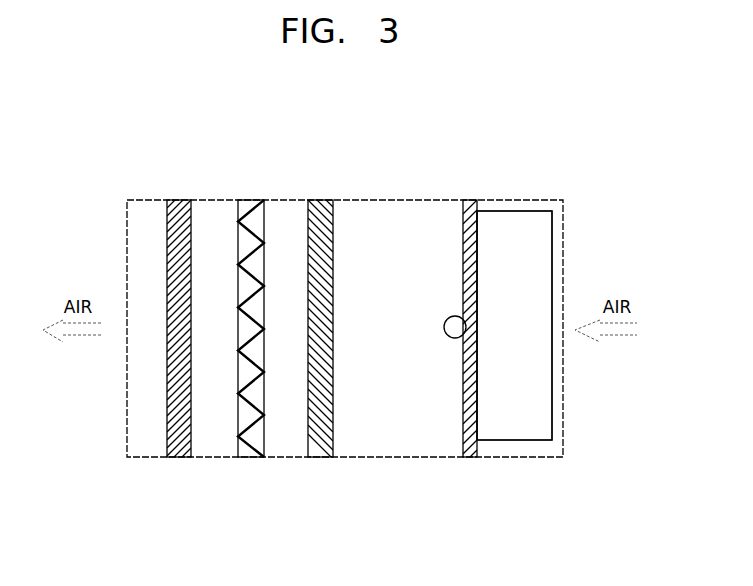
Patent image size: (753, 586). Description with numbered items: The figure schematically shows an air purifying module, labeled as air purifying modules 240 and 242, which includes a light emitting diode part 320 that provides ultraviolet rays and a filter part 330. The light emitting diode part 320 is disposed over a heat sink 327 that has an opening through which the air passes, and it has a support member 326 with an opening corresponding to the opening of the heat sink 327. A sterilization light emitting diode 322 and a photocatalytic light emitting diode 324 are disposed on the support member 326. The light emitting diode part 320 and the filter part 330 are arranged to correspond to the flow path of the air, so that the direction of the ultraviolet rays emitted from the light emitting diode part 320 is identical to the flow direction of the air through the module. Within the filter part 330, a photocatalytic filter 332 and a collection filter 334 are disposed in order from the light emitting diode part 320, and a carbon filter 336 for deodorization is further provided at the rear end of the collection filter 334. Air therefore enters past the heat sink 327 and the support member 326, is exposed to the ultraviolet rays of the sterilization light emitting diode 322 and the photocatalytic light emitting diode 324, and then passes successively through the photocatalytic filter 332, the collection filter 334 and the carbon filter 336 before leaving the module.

The air purifying module 240 is at (401, 259).
The air purifying module 242 is at (345, 328).
The light emitting diode part 320 is at (502, 473).
The sterilization light emitting diode 322 is at (410, 405).
The photocatalytic light emitting diode 324 is at (443, 332).
The support member 326 is at (463, 288).
The heat sink 327 is at (520, 295).
The filter part 330 is at (247, 292).
The photocatalytic filter 332 is at (317, 295).
The collection filter 334 is at (259, 207).
The carbon filter 336 is at (179, 207).